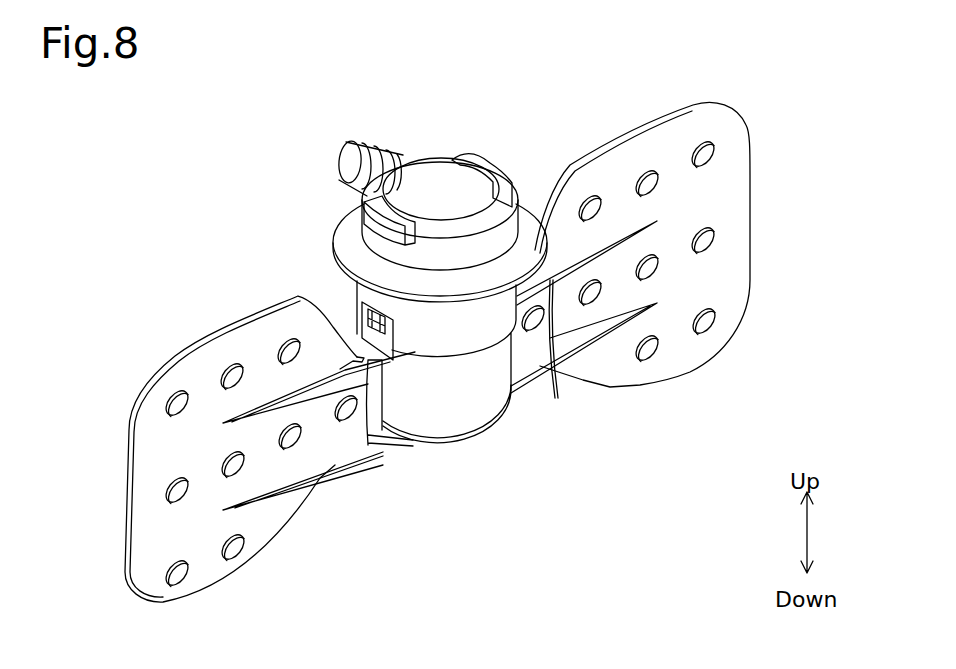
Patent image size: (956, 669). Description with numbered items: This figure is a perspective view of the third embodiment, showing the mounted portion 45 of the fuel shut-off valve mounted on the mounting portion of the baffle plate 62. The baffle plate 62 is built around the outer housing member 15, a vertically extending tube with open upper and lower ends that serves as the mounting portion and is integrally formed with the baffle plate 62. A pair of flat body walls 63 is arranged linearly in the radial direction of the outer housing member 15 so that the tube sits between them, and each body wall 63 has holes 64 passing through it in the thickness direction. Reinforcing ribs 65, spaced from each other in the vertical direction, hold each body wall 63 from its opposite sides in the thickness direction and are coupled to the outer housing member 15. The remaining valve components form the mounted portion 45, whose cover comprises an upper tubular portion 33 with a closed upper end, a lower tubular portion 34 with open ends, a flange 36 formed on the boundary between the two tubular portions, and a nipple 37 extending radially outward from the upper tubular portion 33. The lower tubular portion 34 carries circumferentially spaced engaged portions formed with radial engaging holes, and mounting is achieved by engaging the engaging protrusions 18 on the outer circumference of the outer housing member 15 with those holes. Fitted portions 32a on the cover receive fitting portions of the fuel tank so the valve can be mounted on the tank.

The mounted portion 45 is at (418, 159).
The upper tubular portion 33 is at (468, 172).
The fitted portions 32a is at (497, 161).
The nipple 37 is at (336, 152).
The flange 36 is at (517, 237).
The engaging protrusion 18 is at (372, 337).
The lower tubular portion 34 is at (436, 357).
The outer housing member 15 is at (467, 417).
The baffle plate 62 is at (188, 307).
The body walls 63 is at (273, 519).
The holes 64 is at (282, 345).
The reinforcing ribs 65 is at (366, 450).